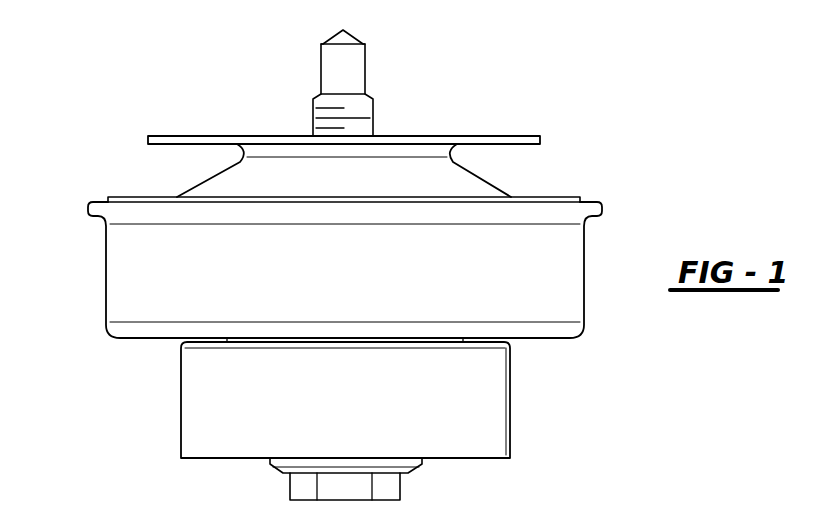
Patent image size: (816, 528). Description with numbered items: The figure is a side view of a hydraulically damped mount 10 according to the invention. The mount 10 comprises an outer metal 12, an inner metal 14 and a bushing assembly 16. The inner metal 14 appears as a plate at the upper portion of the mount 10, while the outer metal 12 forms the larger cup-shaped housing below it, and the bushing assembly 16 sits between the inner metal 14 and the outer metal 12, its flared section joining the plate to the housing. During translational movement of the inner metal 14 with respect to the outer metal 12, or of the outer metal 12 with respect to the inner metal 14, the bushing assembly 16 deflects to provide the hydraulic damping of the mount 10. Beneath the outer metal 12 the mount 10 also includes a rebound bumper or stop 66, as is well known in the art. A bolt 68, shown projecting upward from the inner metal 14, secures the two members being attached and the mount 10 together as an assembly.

The hydraulically damped mount 10 is at (655, 143).
The outer metal 12 is at (137, 277).
The inner metal 14 is at (201, 136).
The bushing assembly 16 is at (247, 178).
The rebound bumper or stop 66 is at (348, 421).
The bolt 68 is at (345, 65).